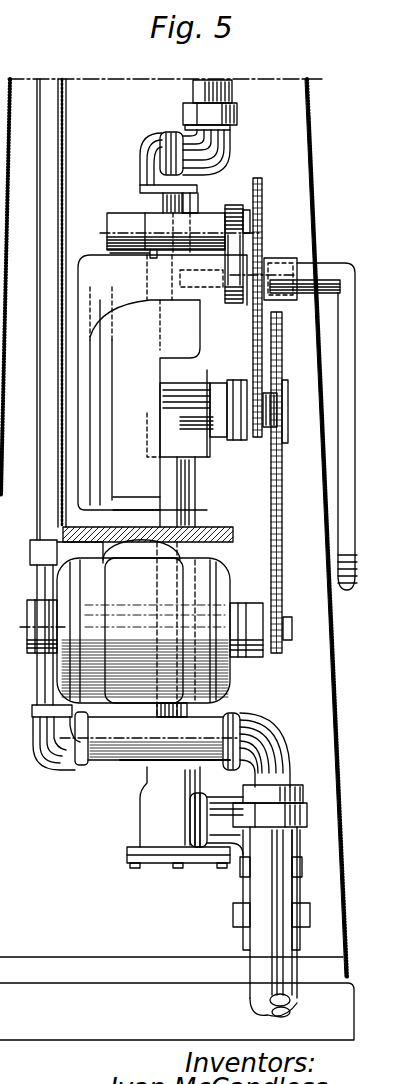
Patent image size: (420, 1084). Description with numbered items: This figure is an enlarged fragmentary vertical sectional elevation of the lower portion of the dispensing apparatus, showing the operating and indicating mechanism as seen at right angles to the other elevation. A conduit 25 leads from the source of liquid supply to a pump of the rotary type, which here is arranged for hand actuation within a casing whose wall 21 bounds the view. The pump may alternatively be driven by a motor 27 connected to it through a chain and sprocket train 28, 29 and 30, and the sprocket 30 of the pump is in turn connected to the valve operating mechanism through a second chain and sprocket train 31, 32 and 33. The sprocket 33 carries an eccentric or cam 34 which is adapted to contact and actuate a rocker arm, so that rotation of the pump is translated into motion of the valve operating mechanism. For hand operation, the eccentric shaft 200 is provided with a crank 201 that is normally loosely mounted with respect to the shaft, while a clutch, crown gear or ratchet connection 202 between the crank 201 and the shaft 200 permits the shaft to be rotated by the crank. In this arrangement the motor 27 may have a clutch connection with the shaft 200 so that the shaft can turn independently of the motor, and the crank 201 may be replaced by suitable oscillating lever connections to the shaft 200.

The casing side wall 21 is at (335, 634).
The conduit 25 is at (296, 1007).
The motor 27 is at (98, 775).
The chain and sprocket train member 28 is at (272, 501).
The chain and sprocket train member 29 is at (285, 635).
The sprocket 30 is at (288, 413).
The chain and sprocket train member 31 is at (263, 203).
The chain and sprocket train member 32 is at (255, 438).
The sprocket 33 is at (263, 248).
The eccentric or cam 34 is at (238, 245).
The eccentric shaft 200 is at (280, 292).
The crank 201 is at (347, 458).
The clutch, crown gear or ratchet connection 202 is at (298, 281).